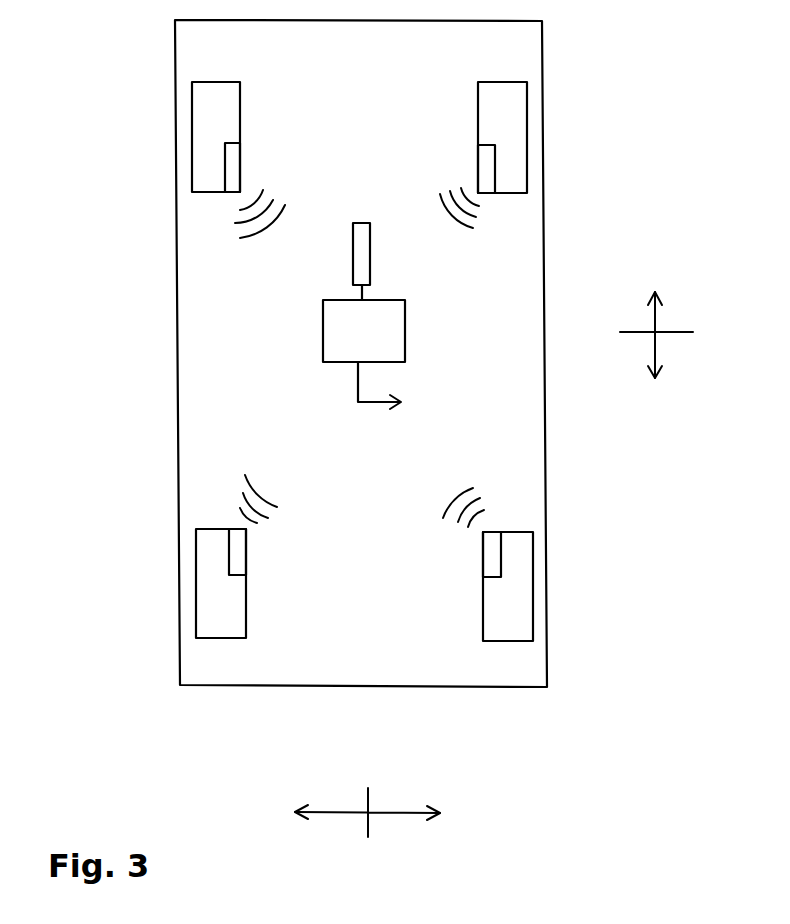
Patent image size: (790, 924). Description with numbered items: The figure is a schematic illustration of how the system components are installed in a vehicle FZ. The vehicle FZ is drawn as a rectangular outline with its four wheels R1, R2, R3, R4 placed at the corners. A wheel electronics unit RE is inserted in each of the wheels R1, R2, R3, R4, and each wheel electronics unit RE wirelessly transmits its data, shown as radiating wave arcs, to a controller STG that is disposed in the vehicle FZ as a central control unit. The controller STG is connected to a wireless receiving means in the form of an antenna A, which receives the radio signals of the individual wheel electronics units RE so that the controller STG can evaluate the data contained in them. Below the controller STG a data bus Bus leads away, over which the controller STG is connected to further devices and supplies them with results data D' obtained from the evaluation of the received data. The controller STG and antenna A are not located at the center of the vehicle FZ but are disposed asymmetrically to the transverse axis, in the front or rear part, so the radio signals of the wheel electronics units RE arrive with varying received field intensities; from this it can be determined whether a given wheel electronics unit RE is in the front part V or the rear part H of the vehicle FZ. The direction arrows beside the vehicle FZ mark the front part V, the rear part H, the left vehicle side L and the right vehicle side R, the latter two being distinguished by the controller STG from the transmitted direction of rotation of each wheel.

The vehicle FZ is at (442, 687).
The wheel R1 is at (203, 115).
The wheel R2 is at (520, 125).
The wheel R3 is at (523, 593).
The wheel R4 is at (205, 602).
The wheel electronics unit RE is at (237, 170).
The antenna A is at (371, 258).
The controller STG is at (364, 331).
The data bus Bus is at (372, 372).
The results data D' is at (427, 397).
The front part V is at (656, 312).
The rear part H is at (651, 408).
The left vehicle side L is at (345, 812).
The right vehicle side R is at (454, 816).